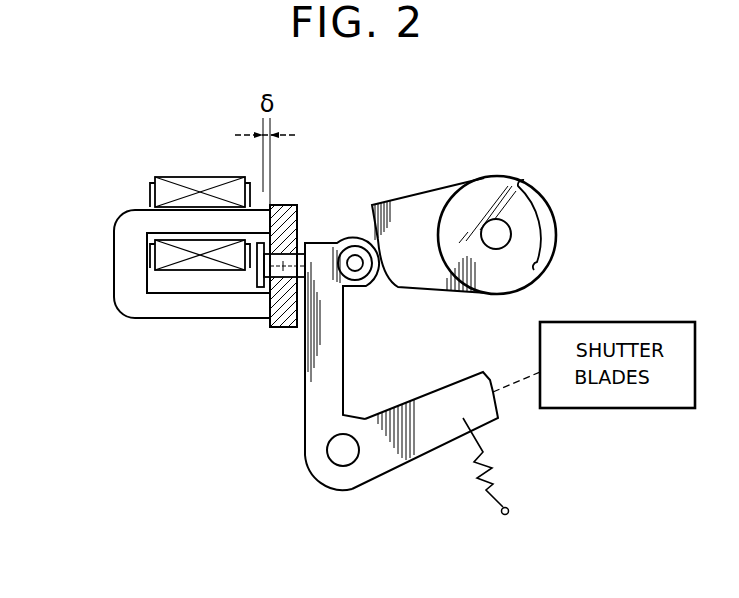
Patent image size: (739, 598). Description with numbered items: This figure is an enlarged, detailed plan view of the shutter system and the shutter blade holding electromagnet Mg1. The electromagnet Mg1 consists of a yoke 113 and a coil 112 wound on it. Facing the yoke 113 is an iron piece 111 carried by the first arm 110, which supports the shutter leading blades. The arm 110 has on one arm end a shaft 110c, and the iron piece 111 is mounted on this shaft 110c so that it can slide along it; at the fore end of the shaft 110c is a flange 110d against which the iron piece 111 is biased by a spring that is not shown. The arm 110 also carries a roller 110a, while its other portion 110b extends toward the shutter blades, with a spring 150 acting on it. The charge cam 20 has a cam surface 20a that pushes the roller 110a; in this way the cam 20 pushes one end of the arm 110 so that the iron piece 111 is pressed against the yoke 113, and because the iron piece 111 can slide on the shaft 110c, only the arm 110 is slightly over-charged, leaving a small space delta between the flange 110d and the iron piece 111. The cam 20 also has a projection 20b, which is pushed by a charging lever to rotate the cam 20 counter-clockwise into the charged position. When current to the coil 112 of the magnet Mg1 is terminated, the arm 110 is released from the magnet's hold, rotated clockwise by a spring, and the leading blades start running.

The electromagnet Mg1 is at (122, 325).
The yoke 113 is at (120, 268).
The coil 112 is at (173, 190).
The iron piece 111 is at (285, 224).
The flange 110d is at (257, 273).
The shaft 110c is at (283, 273).
The arm 110 is at (303, 410).
The roller 110a is at (362, 284).
The arm of lever 110b is at (413, 458).
The charge cam 20 is at (488, 190).
The cam surface 20a is at (372, 222).
The projection 20b is at (545, 207).
The spring 150 is at (497, 470).